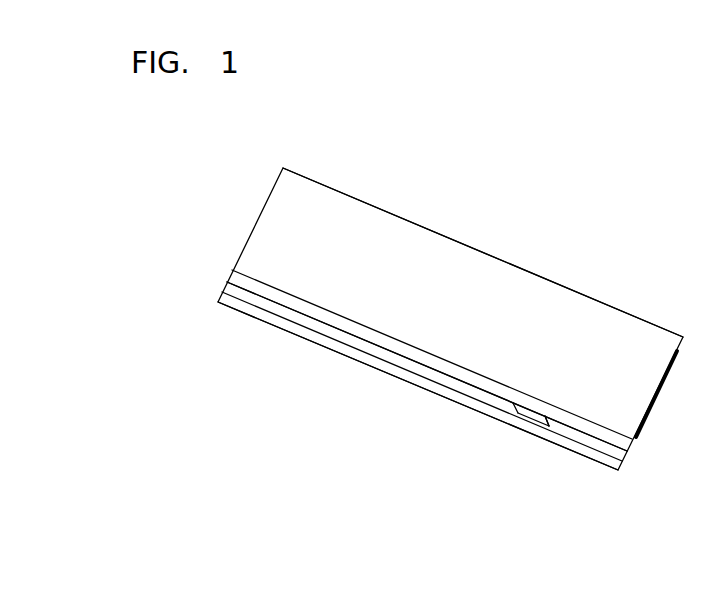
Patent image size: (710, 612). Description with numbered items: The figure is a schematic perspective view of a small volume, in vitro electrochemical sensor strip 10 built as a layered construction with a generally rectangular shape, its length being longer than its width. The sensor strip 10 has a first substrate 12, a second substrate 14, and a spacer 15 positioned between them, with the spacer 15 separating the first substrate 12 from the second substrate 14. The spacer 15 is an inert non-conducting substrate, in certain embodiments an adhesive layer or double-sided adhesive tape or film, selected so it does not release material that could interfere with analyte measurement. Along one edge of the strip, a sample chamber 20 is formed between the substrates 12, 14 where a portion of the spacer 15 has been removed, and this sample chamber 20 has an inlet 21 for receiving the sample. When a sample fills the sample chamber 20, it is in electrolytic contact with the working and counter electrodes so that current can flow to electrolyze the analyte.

The electrochemical sensor strip 10 is at (484, 216).
The first substrate 12 is at (348, 355).
The second substrate 14 is at (502, 283).
The spacer 15 is at (242, 290).
The sample chamber 20 is at (526, 412).
The inlet 21 is at (538, 420).